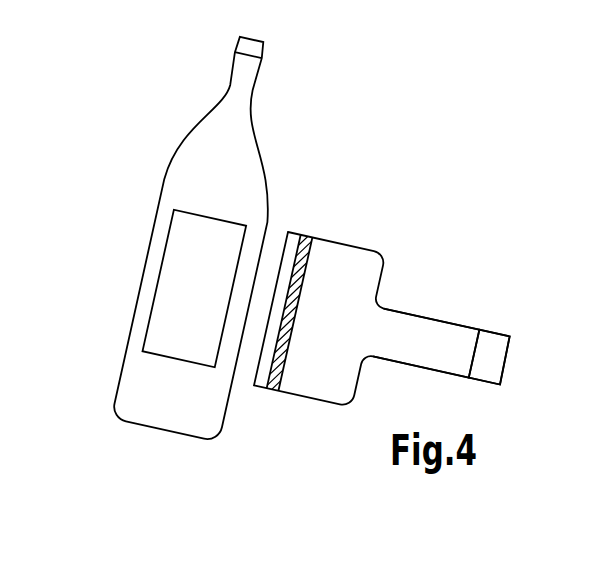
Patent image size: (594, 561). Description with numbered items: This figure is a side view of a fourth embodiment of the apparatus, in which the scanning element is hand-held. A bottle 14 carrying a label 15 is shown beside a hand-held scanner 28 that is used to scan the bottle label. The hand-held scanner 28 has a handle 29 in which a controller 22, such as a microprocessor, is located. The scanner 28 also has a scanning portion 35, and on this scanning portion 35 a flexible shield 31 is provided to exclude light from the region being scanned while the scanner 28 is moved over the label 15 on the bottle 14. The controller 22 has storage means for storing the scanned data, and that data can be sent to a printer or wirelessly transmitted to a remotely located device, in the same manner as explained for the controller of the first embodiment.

The bottle 14 is at (202, 178).
The label 15 is at (180, 290).
The controller 22 is at (493, 347).
The hand-held scanner 28 is at (371, 226).
The handle 29 is at (447, 340).
The flexible shield 31 is at (257, 386).
The scanning portion 35 is at (303, 242).